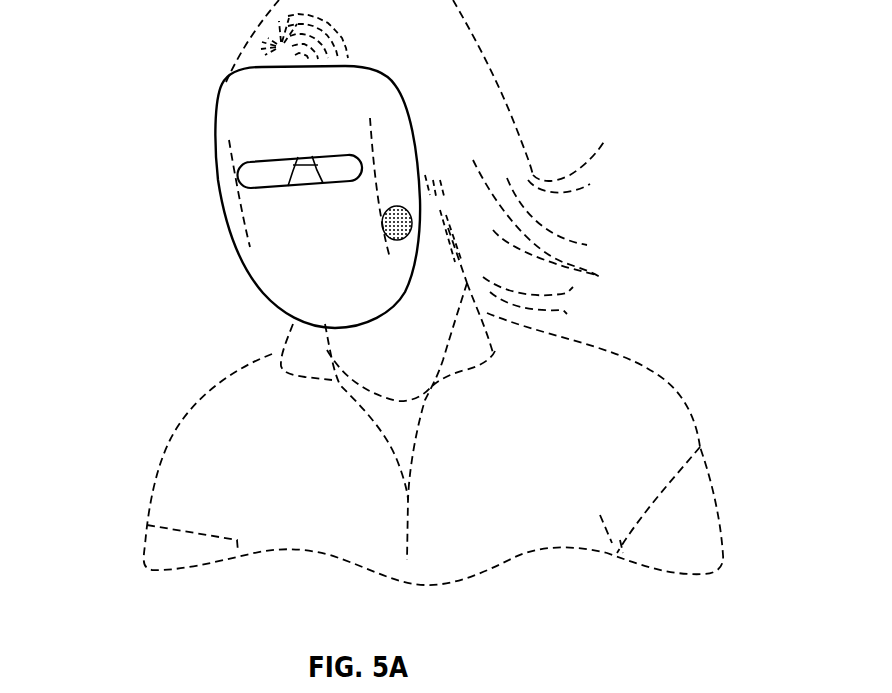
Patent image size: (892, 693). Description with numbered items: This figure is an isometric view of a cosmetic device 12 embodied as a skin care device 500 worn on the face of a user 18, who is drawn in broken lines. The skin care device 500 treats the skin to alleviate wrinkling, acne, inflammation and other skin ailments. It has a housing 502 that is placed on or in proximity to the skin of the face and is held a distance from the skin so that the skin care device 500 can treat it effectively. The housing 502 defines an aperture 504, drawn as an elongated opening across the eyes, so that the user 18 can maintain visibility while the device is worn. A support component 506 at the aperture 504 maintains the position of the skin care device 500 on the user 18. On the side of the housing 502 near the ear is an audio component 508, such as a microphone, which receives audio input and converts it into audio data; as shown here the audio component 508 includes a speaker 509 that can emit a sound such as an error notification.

The cosmetic device 12 is at (347, 197).
The skin care device 500 is at (347, 197).
The housing 502 is at (258, 245).
The aperture 504 is at (253, 177).
The support component 506 is at (292, 164).
The audio component 508 is at (517, 178).
The speaker 509 is at (412, 220).
The user 18 is at (628, 248).